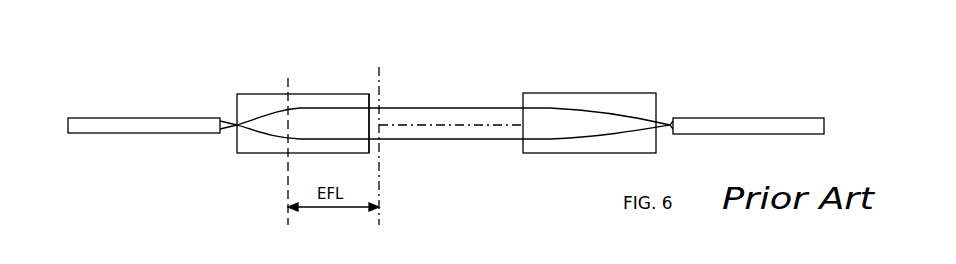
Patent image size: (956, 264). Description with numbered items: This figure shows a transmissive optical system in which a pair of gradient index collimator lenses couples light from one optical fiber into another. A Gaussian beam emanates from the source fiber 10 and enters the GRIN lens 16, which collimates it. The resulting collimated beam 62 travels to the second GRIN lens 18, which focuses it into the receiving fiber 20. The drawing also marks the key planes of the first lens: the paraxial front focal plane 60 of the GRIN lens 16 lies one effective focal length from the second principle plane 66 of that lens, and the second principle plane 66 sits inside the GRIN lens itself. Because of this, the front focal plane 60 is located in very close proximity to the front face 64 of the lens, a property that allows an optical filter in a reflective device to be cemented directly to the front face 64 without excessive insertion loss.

The source fiber 10 is at (140, 134).
The GRIN lens 16 is at (247, 100).
The GRIN lens 18 is at (570, 100).
The receiving fiber 20 is at (733, 135).
The front focal plane 60 is at (379, 83).
The collimated beam 62 is at (437, 108).
The front face 64 is at (373, 144).
The second principle plane 66 is at (282, 167).